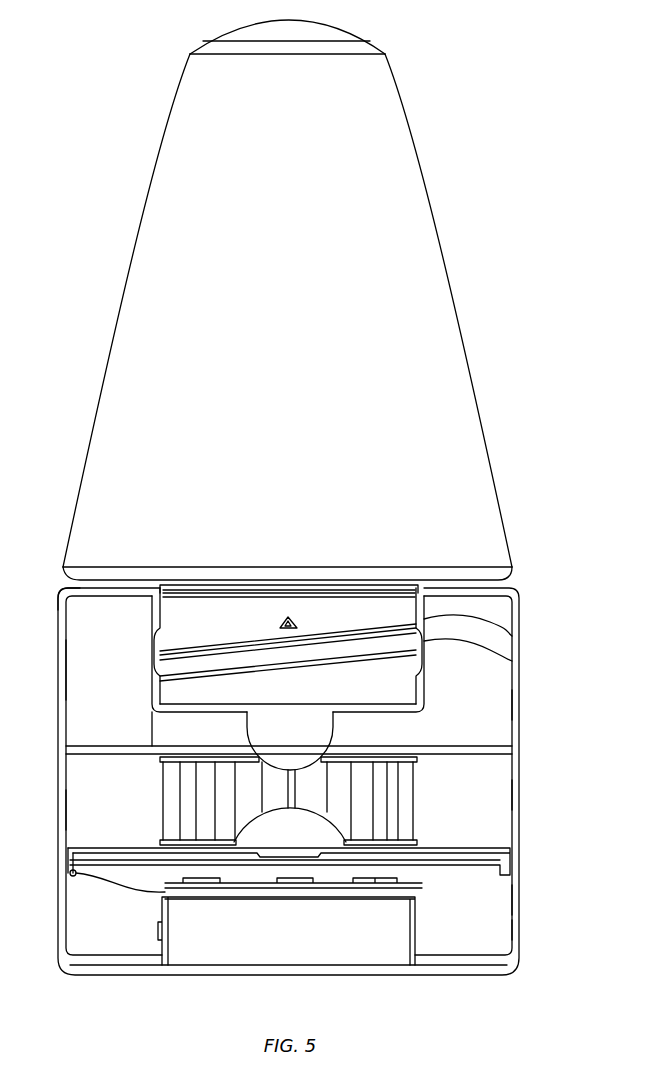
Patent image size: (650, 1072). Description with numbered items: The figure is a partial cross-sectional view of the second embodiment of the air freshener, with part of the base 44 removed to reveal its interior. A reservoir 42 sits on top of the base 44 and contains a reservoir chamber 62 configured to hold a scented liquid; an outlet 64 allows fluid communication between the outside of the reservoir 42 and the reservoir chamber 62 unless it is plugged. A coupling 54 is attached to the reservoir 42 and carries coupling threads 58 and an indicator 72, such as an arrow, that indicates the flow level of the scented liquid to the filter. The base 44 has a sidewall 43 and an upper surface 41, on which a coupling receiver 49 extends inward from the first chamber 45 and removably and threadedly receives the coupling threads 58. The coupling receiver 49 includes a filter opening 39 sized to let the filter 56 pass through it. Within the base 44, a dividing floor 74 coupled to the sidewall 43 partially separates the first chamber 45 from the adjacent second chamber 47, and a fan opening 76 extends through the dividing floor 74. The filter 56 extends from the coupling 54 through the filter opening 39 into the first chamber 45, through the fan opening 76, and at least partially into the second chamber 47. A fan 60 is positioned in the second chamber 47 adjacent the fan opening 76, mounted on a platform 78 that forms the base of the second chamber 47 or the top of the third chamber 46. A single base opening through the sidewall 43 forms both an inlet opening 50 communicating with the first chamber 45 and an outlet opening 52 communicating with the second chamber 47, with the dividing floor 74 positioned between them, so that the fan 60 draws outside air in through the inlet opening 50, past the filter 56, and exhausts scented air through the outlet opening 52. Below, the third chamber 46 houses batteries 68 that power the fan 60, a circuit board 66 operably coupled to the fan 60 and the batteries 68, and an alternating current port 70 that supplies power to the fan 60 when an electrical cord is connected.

The filter opening 39 is at (240, 705).
The upper surface 41 is at (86, 580).
The reservoir 42 is at (455, 255).
The sidewall 43 is at (62, 598).
The base 44 is at (517, 598).
The first chamber 45 is at (75, 682).
The third chamber 46 is at (520, 902).
The second chamber 47 is at (76, 808).
The coupling receiver 49 is at (517, 637).
The inlet opening 50 is at (523, 707).
The outlet opening 52 is at (525, 800).
The coupling 54 is at (355, 618).
The filter 56 is at (315, 726).
The coupling threads 58 is at (517, 660).
The fan 60 is at (170, 800).
The reservoir chamber 62 is at (320, 330).
The outlet 64 is at (218, 583).
The circuit board 66 is at (70, 876).
The batteries 68 is at (285, 955).
The alternating current port 70 is at (513, 932).
The indicator 72 is at (288, 616).
The dividing floor 74 is at (77, 746).
The fan opening 76 is at (165, 748).
The platform 78 is at (500, 848).